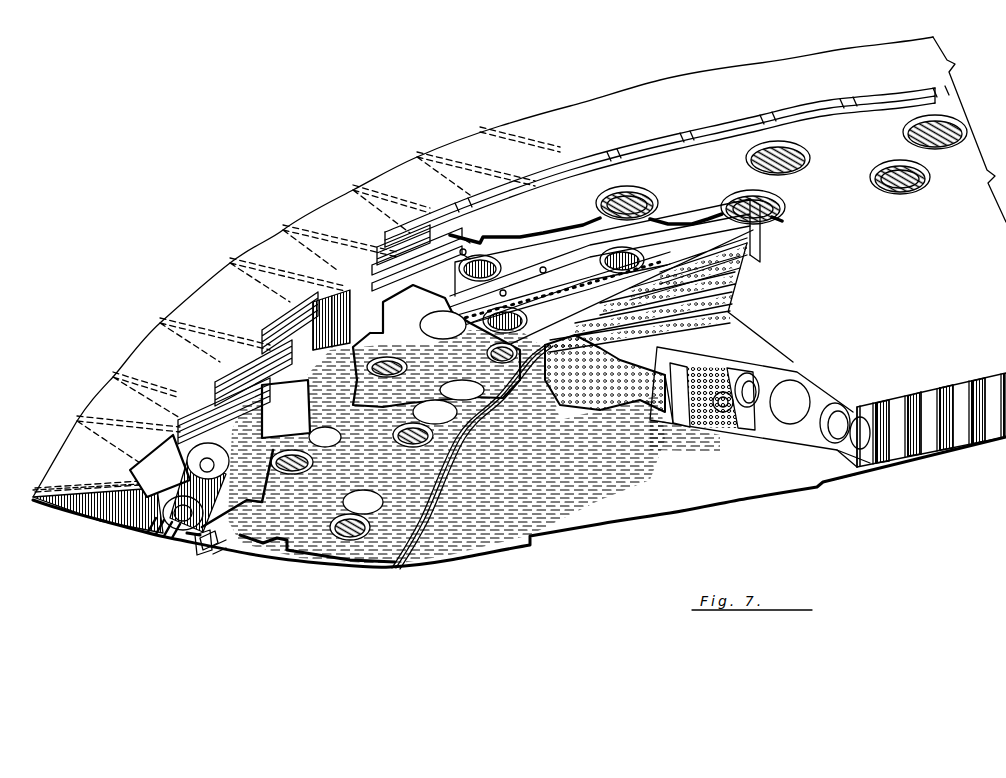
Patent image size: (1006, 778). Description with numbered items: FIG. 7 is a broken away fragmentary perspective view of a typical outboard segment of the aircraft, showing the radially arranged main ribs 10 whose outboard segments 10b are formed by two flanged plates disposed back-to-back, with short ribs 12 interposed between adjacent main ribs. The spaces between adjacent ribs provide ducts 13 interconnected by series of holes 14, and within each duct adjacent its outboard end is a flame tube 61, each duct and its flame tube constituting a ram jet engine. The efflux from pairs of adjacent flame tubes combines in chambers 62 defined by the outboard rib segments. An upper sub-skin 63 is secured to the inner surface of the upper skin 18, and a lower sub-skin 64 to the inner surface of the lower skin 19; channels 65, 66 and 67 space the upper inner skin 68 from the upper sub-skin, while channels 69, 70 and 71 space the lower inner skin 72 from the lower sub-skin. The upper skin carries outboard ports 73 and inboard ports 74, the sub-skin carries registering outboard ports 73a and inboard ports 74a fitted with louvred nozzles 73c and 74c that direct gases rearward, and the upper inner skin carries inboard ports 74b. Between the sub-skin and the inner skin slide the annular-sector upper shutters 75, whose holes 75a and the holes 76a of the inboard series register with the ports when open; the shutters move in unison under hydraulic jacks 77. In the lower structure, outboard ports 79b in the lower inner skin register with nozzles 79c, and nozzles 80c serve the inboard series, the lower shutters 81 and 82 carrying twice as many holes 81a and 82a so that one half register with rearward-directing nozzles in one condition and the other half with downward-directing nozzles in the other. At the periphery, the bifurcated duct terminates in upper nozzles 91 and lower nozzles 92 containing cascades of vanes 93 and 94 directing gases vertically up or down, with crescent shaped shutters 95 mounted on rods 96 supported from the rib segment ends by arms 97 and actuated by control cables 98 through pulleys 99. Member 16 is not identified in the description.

The main rib 10 is at (738, 415).
The outboard rib segment 10b is at (470, 172).
The short rib 12 is at (680, 420).
The duct 13 is at (900, 470).
The holes 14 is at (877, 450).
The rail 16 is at (737, 277).
The upper skin 18 is at (969, 129).
The lower skin 19 is at (833, 465).
The flame tube 61 is at (665, 430).
The chamber 62 is at (545, 415).
The upper sub-skin 63 is at (553, 260).
The lower sub-skin 64 is at (385, 572).
The channel 65 is at (390, 270).
The channel 66 is at (575, 245).
The channel 67 is at (747, 253).
The upper inner skin 68 is at (497, 310).
The channel 69 is at (202, 540).
The channel 70 is at (297, 508).
The channel 71 is at (473, 470).
The lower inner skin 72 is at (213, 552).
The outboard port 73 is at (912, 142).
The outboard port 73a is at (640, 187).
The nozzle 73c is at (905, 128).
The inboard port 74 is at (870, 183).
The inboard port 74a is at (887, 188).
The inboard port 74b is at (557, 293).
The nozzle 74c is at (900, 197).
The upper shutter 75 is at (605, 256).
The hole 75a is at (478, 264).
The hole 76a is at (650, 258).
The hydraulic jack 77 is at (477, 263).
The outboard port 79b is at (277, 470).
The nozzle 79c is at (322, 560).
The nozzle 80c is at (503, 468).
The lower shutter 81 is at (310, 520).
The hole 81a is at (430, 315).
The lower shutter 82 is at (397, 543).
The hole 82a is at (563, 470).
The upper nozzle 91 is at (560, 172).
The lower nozzle 92 is at (160, 527).
The vanes 93 is at (632, 153).
The vanes 94 is at (172, 538).
The crescent shaped shutter 95 is at (258, 378).
The rod 96 is at (158, 500).
The arm 97 is at (275, 358).
The control cable 98 is at (213, 407).
The pulley 99 is at (177, 447).